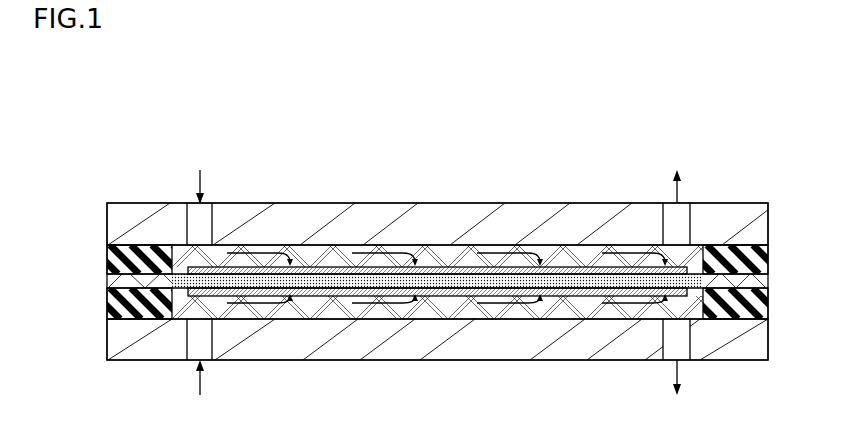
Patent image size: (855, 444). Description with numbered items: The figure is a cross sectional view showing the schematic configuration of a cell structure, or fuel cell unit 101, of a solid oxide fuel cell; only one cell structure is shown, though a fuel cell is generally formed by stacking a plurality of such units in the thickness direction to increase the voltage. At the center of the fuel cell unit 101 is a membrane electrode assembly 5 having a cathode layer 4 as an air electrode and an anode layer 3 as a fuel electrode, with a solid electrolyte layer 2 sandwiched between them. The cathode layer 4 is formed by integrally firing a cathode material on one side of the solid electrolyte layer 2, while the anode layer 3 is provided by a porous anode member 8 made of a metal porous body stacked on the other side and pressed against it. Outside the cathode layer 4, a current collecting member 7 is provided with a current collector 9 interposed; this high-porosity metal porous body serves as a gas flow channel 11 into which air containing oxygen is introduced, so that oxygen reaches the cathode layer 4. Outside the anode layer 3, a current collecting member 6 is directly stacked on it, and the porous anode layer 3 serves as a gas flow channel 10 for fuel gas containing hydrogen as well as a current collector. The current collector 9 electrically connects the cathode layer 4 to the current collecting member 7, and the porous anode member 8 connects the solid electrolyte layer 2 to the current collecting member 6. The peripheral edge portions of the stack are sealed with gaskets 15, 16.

The cell structure (fuel cell unit) 101 is at (474, 128).
The solid electrolyte layer 2 is at (441, 297).
The anode layer 3 is at (500, 322).
The porous anode member 8 is at (447, 357).
The cathode layer 4 is at (584, 266).
The membrane electrode assembly 5 is at (604, 326).
The current collecting member 6 is at (659, 360).
The current collecting member 7 is at (650, 203).
The current collector 9 is at (382, 245).
The gas flow channel 10 is at (330, 303).
The gas flow channel 11 is at (326, 253).
The gasket 15 is at (107, 301).
The gasket 16 is at (107, 257).